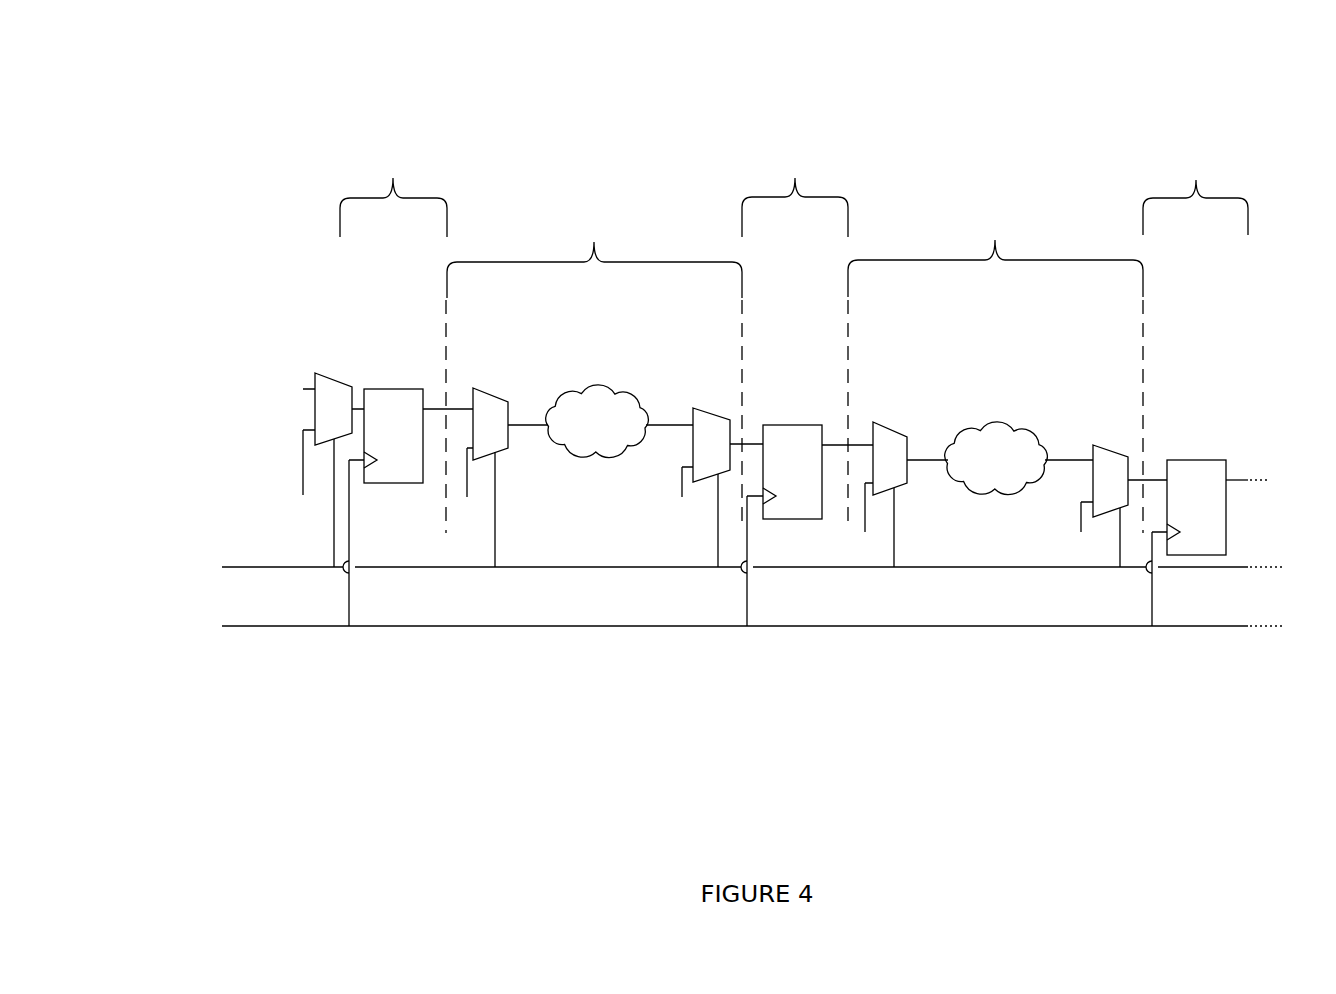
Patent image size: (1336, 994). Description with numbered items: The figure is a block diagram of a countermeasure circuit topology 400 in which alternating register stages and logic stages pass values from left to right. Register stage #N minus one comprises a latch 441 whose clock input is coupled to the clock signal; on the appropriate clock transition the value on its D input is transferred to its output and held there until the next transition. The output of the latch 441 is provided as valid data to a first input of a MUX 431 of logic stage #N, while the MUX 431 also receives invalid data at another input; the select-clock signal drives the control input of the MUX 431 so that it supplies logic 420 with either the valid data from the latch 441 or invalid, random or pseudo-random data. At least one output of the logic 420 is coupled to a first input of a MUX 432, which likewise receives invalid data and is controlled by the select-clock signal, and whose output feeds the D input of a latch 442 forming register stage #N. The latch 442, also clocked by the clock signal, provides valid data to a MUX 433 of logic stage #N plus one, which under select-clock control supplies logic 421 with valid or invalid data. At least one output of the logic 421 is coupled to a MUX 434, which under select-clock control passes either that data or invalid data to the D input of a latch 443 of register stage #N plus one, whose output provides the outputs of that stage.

The pipelined circuit with randomized register stages 400 is at (186, 68).
The logic 420 is at (580, 392).
The logic 421 is at (967, 433).
The MUX 431 is at (476, 388).
The MUX 432 is at (722, 417).
The MUX 433 is at (873, 422).
The MUX 434 is at (1124, 454).
The latch 441 is at (413, 389).
The latch 442 is at (815, 425).
The latch 443 is at (1217, 460).